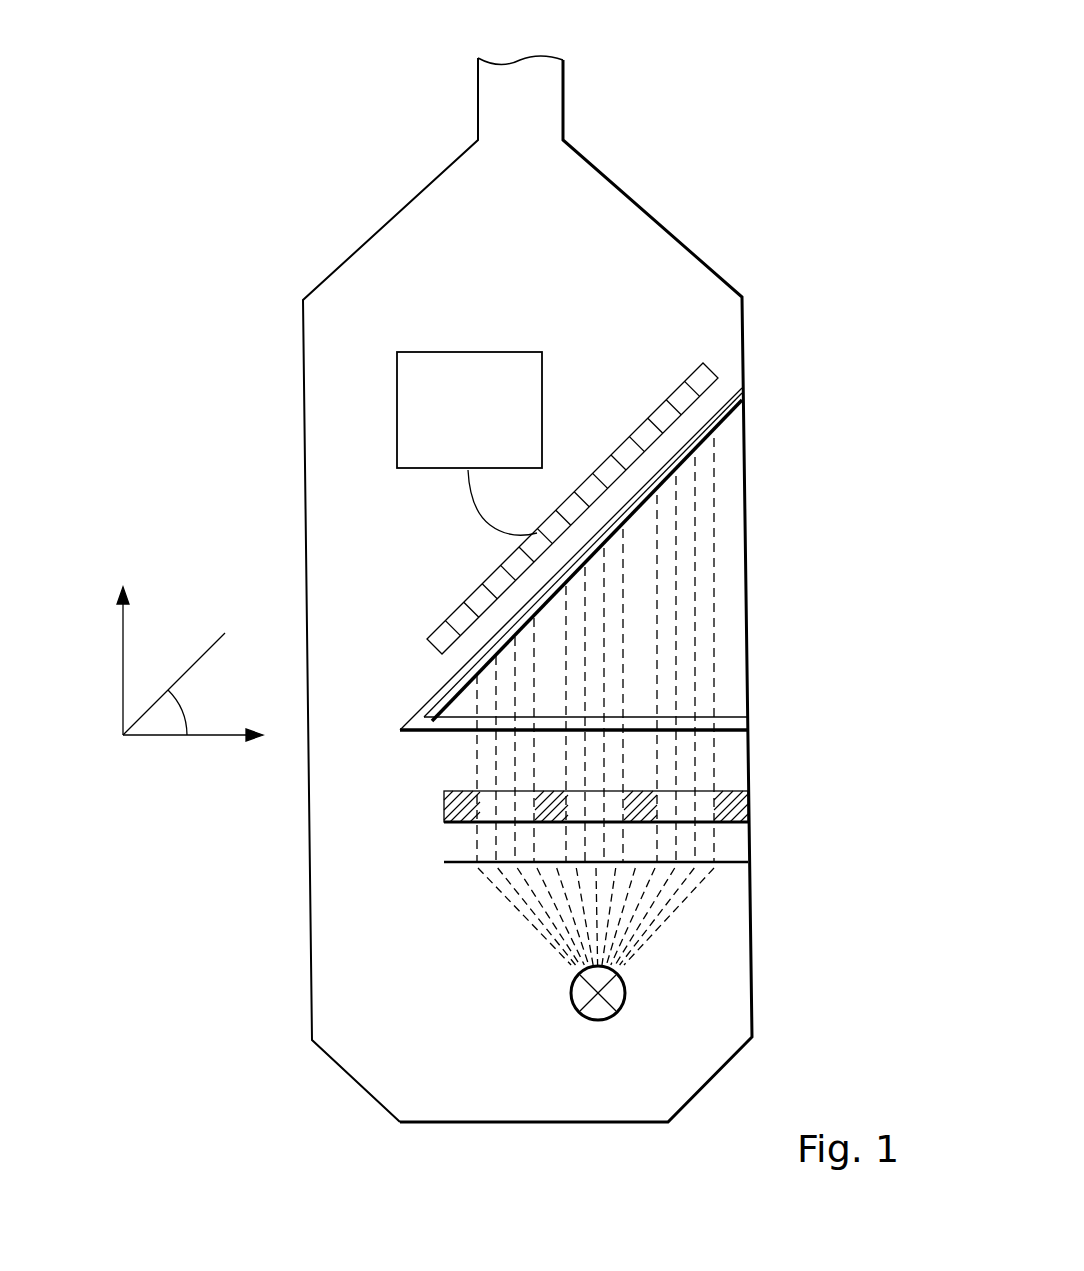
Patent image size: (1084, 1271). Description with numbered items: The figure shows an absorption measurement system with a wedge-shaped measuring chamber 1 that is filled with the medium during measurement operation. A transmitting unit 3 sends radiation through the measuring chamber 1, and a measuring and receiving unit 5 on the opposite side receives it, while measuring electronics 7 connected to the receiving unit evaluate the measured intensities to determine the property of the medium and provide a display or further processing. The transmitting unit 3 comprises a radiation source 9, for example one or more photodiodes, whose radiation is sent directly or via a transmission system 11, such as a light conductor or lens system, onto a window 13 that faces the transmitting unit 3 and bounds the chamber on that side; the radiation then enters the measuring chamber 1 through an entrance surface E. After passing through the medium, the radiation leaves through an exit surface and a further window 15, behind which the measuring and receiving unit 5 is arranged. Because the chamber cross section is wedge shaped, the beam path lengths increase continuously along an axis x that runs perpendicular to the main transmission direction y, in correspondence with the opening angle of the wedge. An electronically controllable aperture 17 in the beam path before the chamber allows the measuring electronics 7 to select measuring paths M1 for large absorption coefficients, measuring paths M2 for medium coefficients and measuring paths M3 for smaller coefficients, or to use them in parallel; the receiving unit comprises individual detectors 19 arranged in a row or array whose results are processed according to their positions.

The measuring chamber 1 is at (790, 526).
The transmitting unit 3 is at (576, 913).
The measuring and receiving unit 5 is at (428, 703).
The measuring electronics 7 is at (477, 425).
The radiation source 9 is at (584, 993).
The transmission system 11 is at (452, 865).
The window 13 is at (750, 720).
The further window 15 is at (727, 418).
The electronically controllable aperture 17 is at (448, 808).
The individual detectors 19 is at (585, 502).
The measuring paths M1 is at (525, 702).
The measuring paths M2 is at (612, 626).
The measuring paths M3 is at (702, 547).
The exit surface A is at (604, 546).
The entrance surface E is at (613, 712).
The axis X x is at (195, 751).
The main transmission direction Y y is at (110, 661).